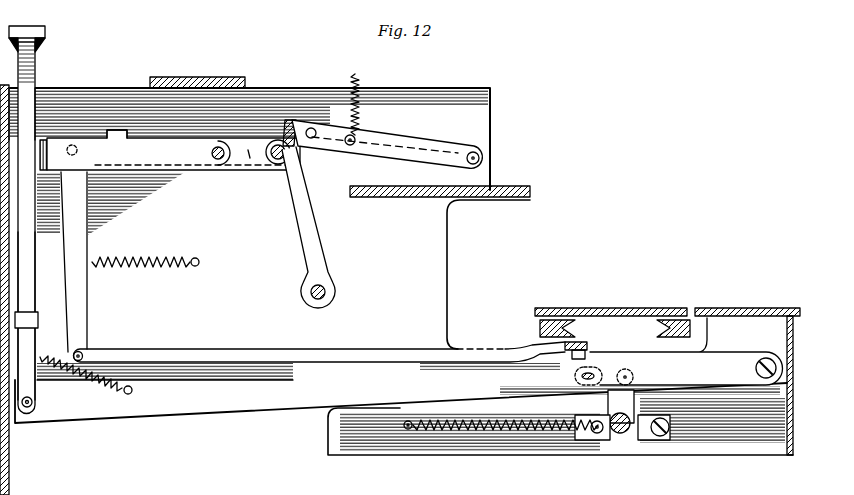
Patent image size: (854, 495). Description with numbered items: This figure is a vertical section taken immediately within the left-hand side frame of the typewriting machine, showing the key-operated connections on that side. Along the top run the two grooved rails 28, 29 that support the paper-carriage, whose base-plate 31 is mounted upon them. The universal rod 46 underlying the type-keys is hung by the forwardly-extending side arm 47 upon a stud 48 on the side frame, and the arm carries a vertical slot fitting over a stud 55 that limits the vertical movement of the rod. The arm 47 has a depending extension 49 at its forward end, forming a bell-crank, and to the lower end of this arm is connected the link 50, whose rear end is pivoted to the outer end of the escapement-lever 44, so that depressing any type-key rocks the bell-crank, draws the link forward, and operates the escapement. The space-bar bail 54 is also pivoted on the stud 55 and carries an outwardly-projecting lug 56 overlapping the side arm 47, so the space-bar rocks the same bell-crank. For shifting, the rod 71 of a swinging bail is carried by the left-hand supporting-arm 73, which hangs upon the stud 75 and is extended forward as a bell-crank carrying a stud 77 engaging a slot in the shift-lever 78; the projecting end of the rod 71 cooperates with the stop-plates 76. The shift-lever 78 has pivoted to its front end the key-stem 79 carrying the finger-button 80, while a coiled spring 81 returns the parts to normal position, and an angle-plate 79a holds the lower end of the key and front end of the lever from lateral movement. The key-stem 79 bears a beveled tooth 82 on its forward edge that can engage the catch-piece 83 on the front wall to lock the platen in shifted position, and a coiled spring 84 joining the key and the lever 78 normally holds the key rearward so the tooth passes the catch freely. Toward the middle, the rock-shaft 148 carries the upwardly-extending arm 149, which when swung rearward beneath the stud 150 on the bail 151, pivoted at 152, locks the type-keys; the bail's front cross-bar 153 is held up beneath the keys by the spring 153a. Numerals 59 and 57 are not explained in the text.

The finger-button 80 is at (45, 33).
The beveled tooth or shoulder 82 is at (17, 147).
The catch-piece 83 is at (19, 150).
The key-stem 79 is at (37, 268).
The angle-plate 79a is at (38, 321).
The bail 54 is at (170, 150).
The lug 56 is at (117, 134).
The stud 48 is at (78, 151).
The stud 55 is at (216, 160).
The side arm 47 is at (249, 158).
The universal rod 46 is at (279, 162).
The link 59 is at (73, 262).
The depending extension 49 is at (88, 228).
The spring 57 is at (164, 260).
The front cross-bar 153 is at (284, 128).
The bail 151 is at (396, 140).
The stud 150 is at (312, 128).
The pivot 152 is at (480, 157).
The spring 153a is at (360, 78).
The arm 149 is at (308, 235).
The rock-shaft 148 is at (335, 292).
The link 50 is at (228, 340).
The coiled spring 84 is at (90, 385).
The shift-lever 78 is at (401, 400).
The supporting-arm 73 is at (690, 410).
The base-plate 31 is at (615, 309).
The grooved rail 28 is at (540, 330).
The grooved rail 29 is at (665, 334).
The escapement-lever 44 is at (587, 345).
The stud 75 is at (633, 377).
The stud 77 is at (575, 378).
The rod 71 is at (624, 434).
The stop-plate 76 is at (661, 437).
The coiled spring 81 is at (532, 432).